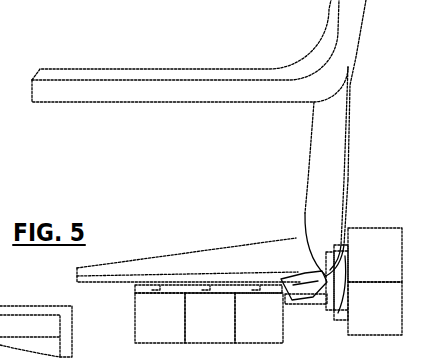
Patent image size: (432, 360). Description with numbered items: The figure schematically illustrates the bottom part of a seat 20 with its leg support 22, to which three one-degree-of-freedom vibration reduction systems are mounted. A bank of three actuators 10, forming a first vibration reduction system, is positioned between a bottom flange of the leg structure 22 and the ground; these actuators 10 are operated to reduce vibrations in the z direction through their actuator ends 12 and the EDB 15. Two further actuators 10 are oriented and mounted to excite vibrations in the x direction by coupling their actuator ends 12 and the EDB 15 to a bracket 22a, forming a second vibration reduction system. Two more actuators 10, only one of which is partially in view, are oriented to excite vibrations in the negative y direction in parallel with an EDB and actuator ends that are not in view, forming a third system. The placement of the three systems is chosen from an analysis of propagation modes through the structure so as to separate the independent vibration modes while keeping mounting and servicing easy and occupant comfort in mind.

The actuator 10 is at (288, 295).
The actuator end 12 is at (278, 288).
The EDB 15 is at (304, 299).
The seat 20 is at (353, 58).
The leg support 22 is at (336, 166).
The bracket 22a is at (307, 265).